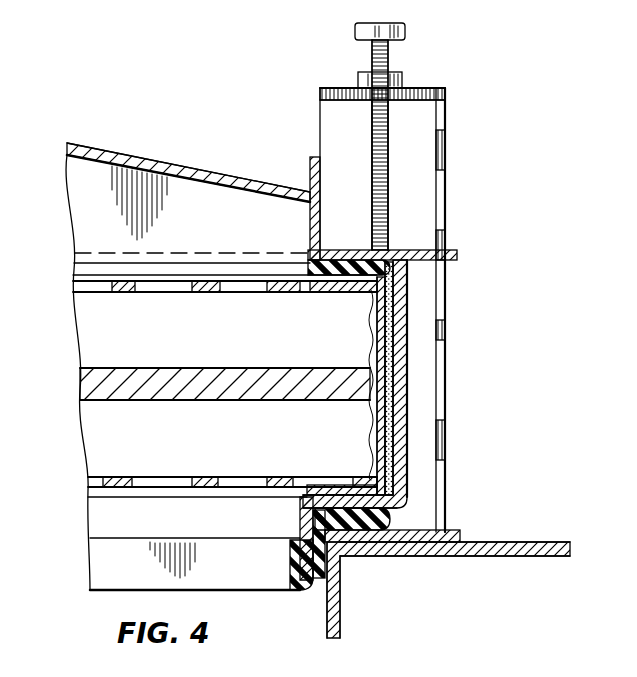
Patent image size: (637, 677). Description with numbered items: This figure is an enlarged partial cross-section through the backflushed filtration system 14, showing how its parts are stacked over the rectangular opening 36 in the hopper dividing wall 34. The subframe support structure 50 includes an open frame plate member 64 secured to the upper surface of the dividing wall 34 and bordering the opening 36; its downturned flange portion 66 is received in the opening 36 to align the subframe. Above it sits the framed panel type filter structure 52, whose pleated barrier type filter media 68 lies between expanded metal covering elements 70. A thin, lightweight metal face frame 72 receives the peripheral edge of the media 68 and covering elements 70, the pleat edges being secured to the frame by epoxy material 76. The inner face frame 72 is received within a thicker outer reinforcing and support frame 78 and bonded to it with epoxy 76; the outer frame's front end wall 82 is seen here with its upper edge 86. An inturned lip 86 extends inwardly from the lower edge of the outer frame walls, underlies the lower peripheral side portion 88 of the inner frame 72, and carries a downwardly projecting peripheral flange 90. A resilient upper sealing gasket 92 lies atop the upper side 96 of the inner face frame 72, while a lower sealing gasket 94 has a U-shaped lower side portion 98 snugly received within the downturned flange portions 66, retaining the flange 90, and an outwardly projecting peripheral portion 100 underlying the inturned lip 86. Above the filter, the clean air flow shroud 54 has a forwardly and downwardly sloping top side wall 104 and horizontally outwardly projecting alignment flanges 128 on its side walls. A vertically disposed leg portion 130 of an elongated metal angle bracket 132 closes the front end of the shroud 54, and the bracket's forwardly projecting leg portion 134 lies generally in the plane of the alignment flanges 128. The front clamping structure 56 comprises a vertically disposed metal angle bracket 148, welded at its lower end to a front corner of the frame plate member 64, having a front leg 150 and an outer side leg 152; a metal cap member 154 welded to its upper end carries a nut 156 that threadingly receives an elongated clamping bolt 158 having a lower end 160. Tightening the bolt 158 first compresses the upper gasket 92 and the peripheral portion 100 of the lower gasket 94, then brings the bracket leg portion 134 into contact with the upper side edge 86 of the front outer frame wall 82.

The backflushed filtration system 14 is at (503, 74).
The hopper dividing wall 34 is at (478, 560).
The rectangular opening 36 is at (342, 558).
The subframe support structure 50 is at (480, 525).
The panel type filter structure 52 is at (424, 341).
The clean air flow shroud 54 is at (95, 138).
The front clamping structure 56 is at (462, 140).
The open frame plate member 64 is at (423, 531).
The downturned flange portion 66 is at (340, 612).
The pleated barrier type filter media 68 is at (87, 420).
The expanded metal covering element 70 is at (205, 281).
The metal face frame 72 is at (400, 403).
The epoxy material 76 is at (380, 303).
The outer reinforcing and support frame 78 is at (414, 376).
The front end wall 82 is at (382, 447).
The inturned lip 86 is at (392, 258).
The lower peripheral side portion 88 is at (318, 488).
The peripheral flange 90 is at (303, 525).
The upper sealing gasket 92 is at (325, 262).
The lower sealing gasket 94 is at (284, 558).
The upper side 96 is at (338, 292).
The lower side portion 98 is at (290, 580).
The outwardly projecting peripheral portion 100 is at (385, 528).
The top side wall 104 is at (168, 158).
The alignment flange 128 is at (135, 253).
The vertically disposed leg portion 130 is at (309, 213).
The angle bracket 132 is at (309, 146).
The forwardly projecting leg portion 134 is at (455, 250).
The vertically disposed metal angle bracket 148 is at (453, 163).
The front leg 150 is at (446, 183).
The outer side leg 152 is at (427, 117).
The metal cap member 154 is at (438, 88).
The nut 156 is at (405, 78).
The clamping bolt 158 is at (368, 53).
The lower end 160 is at (385, 250).